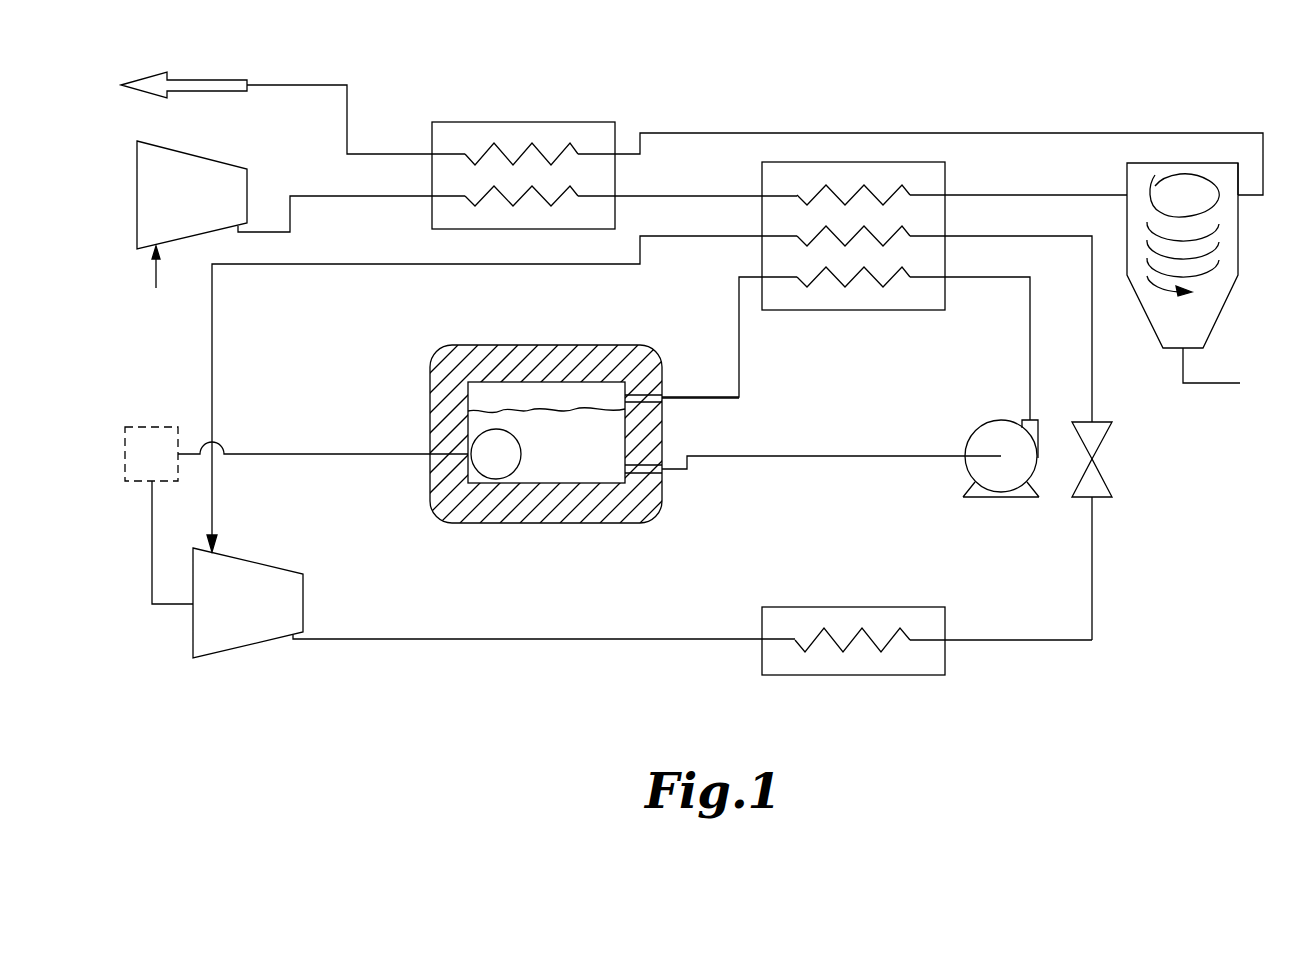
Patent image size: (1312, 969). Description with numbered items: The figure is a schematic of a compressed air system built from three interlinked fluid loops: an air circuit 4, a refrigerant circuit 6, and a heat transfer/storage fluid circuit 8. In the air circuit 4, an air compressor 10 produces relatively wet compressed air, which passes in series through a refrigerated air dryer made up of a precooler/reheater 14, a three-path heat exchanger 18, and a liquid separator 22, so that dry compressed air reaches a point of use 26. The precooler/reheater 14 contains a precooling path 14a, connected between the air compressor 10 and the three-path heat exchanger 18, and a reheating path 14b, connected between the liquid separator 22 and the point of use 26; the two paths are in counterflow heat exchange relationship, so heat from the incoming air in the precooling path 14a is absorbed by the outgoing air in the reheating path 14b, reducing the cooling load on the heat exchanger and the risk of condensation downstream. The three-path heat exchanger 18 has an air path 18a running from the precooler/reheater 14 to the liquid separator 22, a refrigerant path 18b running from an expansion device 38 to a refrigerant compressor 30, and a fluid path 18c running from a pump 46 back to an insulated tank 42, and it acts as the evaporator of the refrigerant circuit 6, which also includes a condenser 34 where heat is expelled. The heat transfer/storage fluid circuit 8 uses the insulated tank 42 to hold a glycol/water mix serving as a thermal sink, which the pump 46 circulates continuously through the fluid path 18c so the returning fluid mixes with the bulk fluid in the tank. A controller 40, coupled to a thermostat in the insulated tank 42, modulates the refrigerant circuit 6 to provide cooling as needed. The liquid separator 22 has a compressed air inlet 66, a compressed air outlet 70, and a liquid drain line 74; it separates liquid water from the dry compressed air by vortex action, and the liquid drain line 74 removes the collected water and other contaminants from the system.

The air circuit 4 is at (180, 282).
The refrigerant circuit 6 is at (494, 624).
The heat transfer/storage fluid circuit 8 is at (630, 470).
The air compressor 10 is at (200, 145).
The precooler/reheater 14 is at (529, 136).
The precooling path 14a is at (553, 198).
The reheating path 14b is at (553, 156).
The three-path heat exchanger 18 is at (859, 197).
The air path 18a is at (883, 199).
The refrigerant path 18b is at (883, 240).
The fluid path 18c is at (883, 281).
The liquid separator 22 is at (1223, 315).
The point of use 26 is at (218, 78).
The refrigerant compressor 30 is at (272, 565).
The condenser 34 is at (888, 675).
The expansion device 38 is at (1100, 470).
The controller 40 is at (125, 452).
The insulated tank 42 is at (515, 523).
The pump 46 is at (997, 497).
The compressed air inlet 66 is at (1127, 190).
The compressed air outlet 70 is at (1240, 197).
The liquid drain line 74 is at (1220, 383).